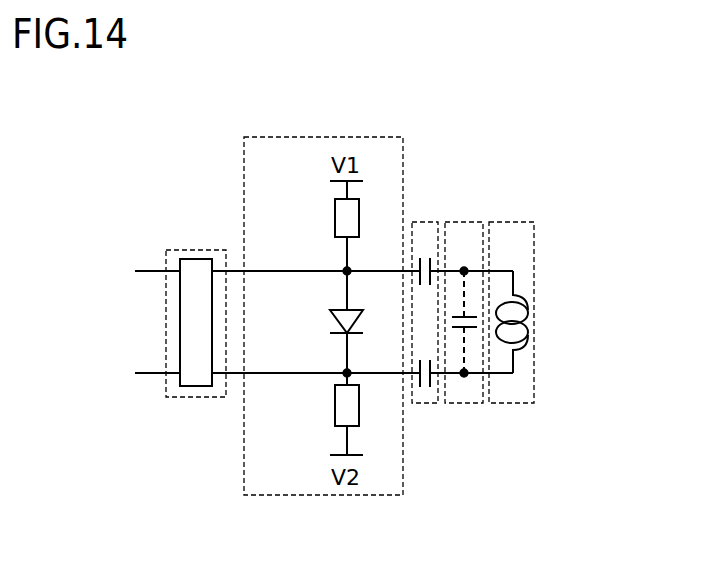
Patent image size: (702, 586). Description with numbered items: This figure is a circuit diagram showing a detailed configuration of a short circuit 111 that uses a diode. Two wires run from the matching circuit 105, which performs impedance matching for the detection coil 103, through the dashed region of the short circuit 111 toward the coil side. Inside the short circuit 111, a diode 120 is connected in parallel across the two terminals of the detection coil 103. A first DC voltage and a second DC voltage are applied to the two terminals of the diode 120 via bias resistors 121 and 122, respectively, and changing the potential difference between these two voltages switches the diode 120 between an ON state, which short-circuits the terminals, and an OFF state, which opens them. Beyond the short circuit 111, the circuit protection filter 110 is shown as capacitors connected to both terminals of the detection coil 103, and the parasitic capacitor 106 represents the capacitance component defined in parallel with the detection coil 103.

The detection coil 103 is at (516, 222).
The matching circuit 105 is at (185, 250).
The parasitic capacitor 106 is at (467, 222).
The circuit protection filter 110 is at (424, 222).
The short circuit 111 is at (317, 137).
The diode 120 is at (332, 318).
The bias resistor 121 is at (335, 218).
The bias resistor 122 is at (335, 408).